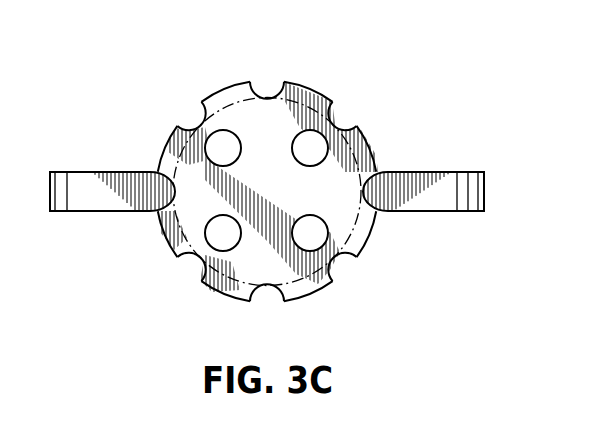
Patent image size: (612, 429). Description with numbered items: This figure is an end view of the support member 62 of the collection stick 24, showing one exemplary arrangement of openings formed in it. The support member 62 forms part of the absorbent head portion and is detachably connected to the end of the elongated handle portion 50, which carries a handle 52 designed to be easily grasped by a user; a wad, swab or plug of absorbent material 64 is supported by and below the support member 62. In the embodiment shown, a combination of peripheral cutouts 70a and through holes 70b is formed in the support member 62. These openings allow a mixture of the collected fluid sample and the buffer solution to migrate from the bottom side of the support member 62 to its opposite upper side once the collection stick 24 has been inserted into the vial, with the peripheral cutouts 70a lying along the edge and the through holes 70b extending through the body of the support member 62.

The collection stick 24 is at (280, 193).
The handle portion 50 is at (487, 189).
The handle 52 is at (74, 172).
The support member 62 is at (217, 93).
The absorbent material 64 is at (180, 161).
The peripheral cutouts 70a is at (257, 81).
The through holes 70b is at (222, 148).